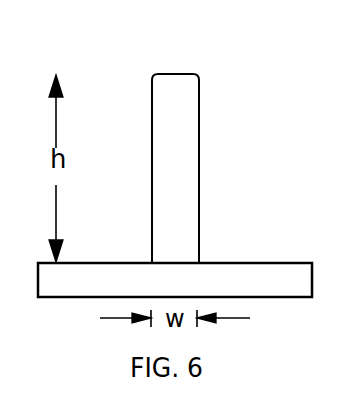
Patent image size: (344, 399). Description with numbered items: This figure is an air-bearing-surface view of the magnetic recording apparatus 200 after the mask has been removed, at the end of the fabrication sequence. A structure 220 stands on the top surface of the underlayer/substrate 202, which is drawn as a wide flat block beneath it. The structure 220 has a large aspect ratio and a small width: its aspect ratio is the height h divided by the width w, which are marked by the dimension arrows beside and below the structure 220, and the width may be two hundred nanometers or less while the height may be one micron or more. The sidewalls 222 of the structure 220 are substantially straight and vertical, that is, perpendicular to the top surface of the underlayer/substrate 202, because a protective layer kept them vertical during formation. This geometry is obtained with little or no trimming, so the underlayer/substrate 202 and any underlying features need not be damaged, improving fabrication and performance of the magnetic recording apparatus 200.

The magnetic recording apparatus 200 is at (198, 36).
The structure 220 is at (175, 168).
The underlayer/substrate 202 is at (175, 280).
The sidewalls 222 is at (129, 207).